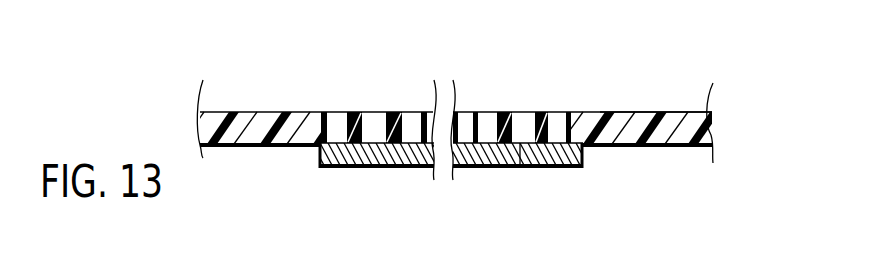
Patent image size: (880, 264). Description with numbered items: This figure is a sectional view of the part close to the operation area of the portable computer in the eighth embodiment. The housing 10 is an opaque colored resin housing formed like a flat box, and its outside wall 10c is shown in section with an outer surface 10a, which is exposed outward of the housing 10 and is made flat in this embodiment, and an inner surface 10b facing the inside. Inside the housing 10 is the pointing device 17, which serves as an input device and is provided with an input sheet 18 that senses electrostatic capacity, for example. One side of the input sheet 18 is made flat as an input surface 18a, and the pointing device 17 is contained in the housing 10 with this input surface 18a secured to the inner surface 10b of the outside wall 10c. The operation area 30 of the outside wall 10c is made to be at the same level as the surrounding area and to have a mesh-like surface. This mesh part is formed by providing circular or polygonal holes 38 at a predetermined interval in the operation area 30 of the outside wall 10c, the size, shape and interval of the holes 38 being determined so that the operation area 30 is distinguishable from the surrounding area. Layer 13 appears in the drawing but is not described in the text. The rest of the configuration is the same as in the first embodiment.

The housing 10 is at (630, 112).
The outer surface 10a is at (688, 112).
The inner surface 10b is at (667, 148).
The outside wall 10c is at (714, 131).
The insulating layer 13 is at (252, 111).
The pointing device 17 is at (352, 168).
The input sheet 18 is at (408, 168).
The input surface 18a is at (519, 168).
The operation area 30 is at (414, 112).
The hole 38 is at (407, 112).